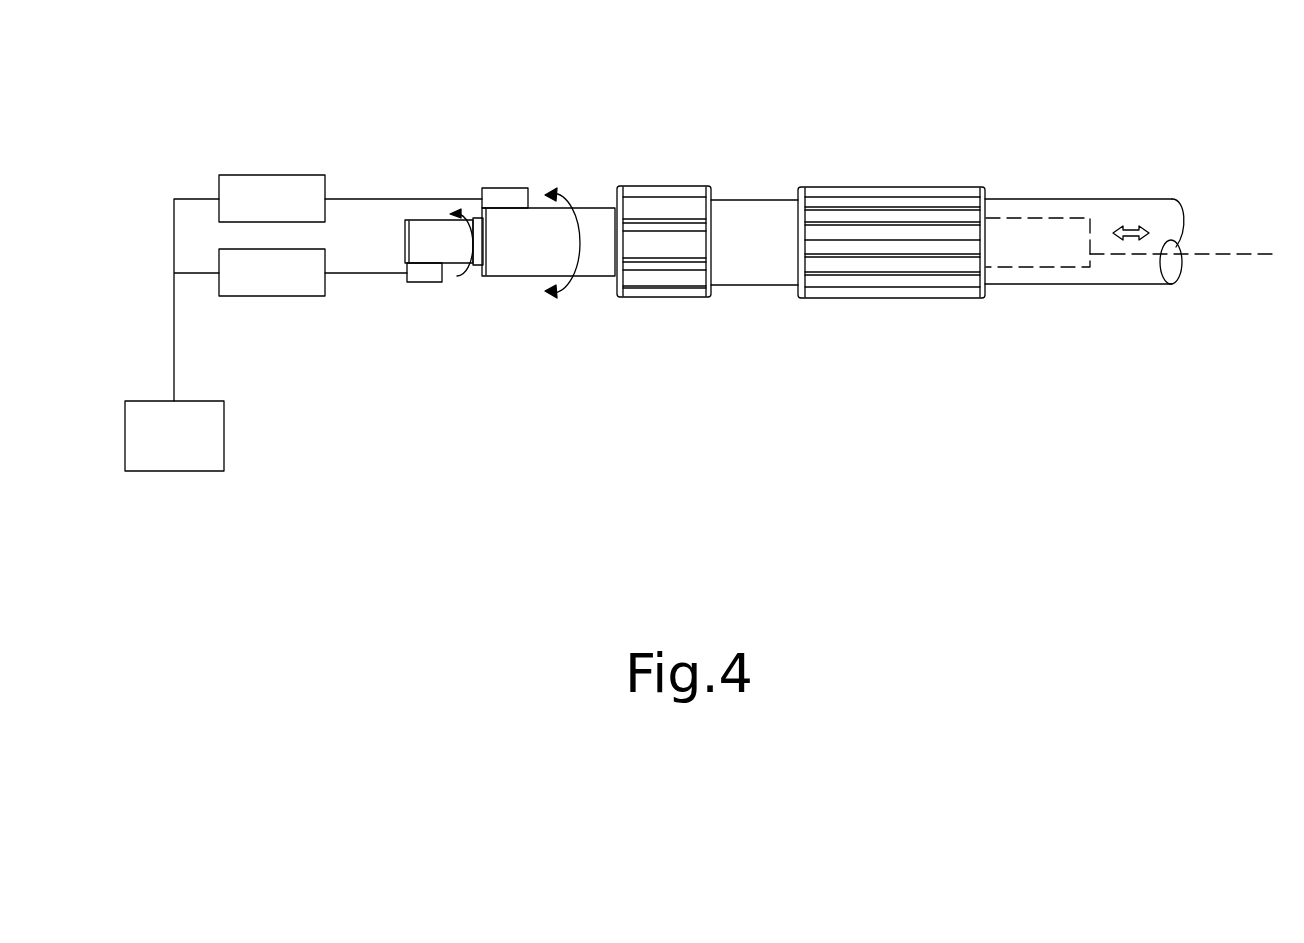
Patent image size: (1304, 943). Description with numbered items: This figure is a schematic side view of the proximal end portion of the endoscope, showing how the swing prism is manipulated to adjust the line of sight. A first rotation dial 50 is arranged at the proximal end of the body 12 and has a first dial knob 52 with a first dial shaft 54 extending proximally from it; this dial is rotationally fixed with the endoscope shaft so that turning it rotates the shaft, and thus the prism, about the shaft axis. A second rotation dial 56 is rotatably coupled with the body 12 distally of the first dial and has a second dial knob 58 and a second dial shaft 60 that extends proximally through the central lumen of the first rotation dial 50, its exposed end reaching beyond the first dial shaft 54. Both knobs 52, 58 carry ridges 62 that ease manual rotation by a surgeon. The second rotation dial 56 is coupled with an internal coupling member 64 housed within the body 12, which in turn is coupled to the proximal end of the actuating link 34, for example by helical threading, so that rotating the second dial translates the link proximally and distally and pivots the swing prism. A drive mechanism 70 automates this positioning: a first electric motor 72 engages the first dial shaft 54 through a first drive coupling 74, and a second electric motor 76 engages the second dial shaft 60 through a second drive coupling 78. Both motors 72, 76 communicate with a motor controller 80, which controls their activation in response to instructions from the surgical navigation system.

The drive mechanism 70 is at (158, 138).
The first electric motor 72 is at (266, 175).
The second electric motor 76 is at (258, 297).
The motor controller 80 is at (192, 448).
The second dial shaft 60 is at (418, 220).
The second drive coupling 78 is at (427, 283).
The first drive coupling 74 is at (505, 188).
The first dial shaft 54 is at (518, 276).
The first rotation dial 50 is at (635, 178).
The first dial knob 52 is at (665, 186).
The body 12 is at (736, 200).
The second rotation dial 56 is at (850, 176).
The second dial knob 58 is at (928, 187).
The ridges 62 is at (670, 247).
The actuating link 34 is at (1225, 254).
The coupling member 64 is at (1038, 217).